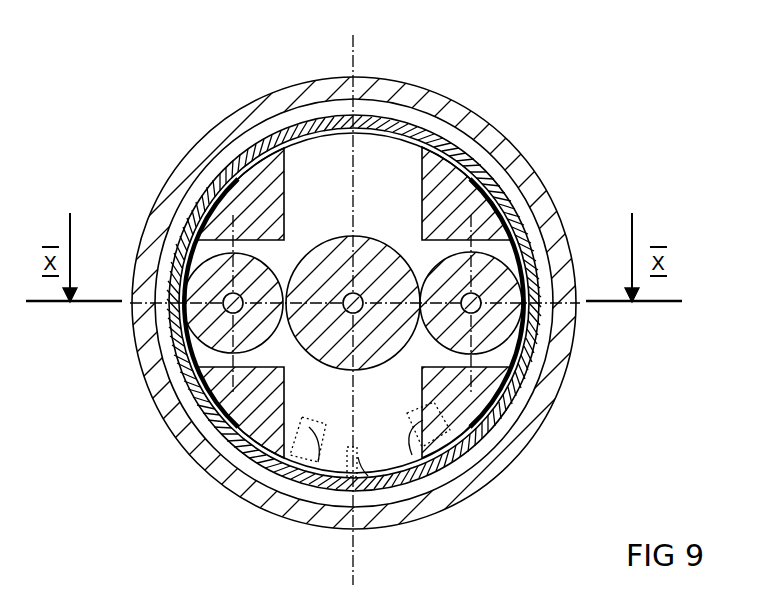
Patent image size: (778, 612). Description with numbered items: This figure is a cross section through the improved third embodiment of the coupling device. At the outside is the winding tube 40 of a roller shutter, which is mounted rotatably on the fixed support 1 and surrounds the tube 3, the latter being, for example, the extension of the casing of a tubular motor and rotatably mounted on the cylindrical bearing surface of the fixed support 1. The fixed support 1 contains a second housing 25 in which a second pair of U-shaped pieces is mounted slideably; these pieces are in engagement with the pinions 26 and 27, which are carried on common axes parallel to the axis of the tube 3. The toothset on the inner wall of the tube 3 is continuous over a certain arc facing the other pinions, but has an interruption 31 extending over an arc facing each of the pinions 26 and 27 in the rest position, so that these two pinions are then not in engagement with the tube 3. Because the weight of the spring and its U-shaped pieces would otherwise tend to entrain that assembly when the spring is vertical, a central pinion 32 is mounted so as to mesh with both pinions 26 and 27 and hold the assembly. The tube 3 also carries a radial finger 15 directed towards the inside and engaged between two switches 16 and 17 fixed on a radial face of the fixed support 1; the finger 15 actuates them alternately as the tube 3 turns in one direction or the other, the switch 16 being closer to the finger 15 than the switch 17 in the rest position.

The fixed support 1 is at (240, 423).
The tube 3 is at (233, 160).
The radial finger 15 is at (368, 476).
The switch 16 is at (318, 462).
The switch 17 is at (414, 456).
The second housing 25 is at (390, 150).
The pinion 26 is at (217, 330).
The pinion 27 is at (483, 273).
The interruption 31 is at (186, 264).
The central pinion 32 is at (368, 250).
The winding tube 40 is at (262, 103).